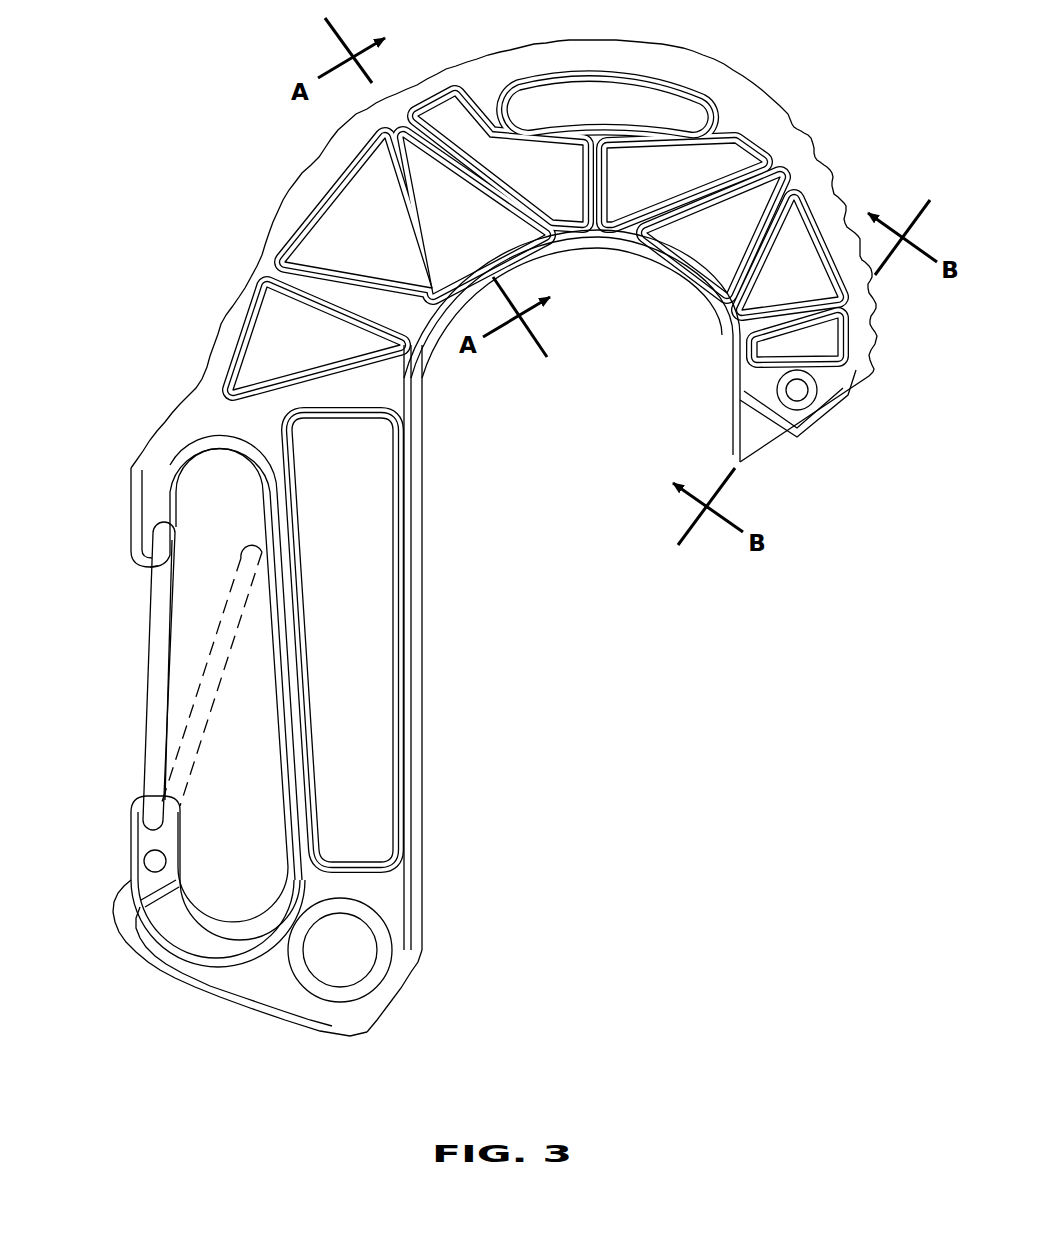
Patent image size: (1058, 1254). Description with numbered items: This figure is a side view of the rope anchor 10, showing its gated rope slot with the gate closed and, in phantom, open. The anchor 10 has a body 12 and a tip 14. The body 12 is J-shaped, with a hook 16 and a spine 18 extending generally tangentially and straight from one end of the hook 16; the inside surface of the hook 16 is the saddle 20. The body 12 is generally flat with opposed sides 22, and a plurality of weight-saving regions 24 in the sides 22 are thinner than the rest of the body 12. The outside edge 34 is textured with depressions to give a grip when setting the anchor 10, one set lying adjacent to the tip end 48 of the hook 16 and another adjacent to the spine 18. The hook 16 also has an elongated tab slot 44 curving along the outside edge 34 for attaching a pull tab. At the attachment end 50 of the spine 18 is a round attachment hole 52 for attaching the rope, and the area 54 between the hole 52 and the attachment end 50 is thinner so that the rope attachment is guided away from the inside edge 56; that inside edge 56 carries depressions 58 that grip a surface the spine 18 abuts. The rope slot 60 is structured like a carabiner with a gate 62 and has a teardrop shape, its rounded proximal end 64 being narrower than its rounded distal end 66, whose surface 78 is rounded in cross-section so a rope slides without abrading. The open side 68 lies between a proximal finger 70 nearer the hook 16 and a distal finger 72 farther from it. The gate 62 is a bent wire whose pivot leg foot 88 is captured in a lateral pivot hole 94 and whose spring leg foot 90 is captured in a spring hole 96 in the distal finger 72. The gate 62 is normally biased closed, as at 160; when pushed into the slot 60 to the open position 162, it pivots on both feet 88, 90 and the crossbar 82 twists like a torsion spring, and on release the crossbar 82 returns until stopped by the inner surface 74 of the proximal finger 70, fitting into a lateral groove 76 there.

The rope anchor 10 is at (778, 52).
The body 12 is at (312, 150).
The tip 14 is at (766, 457).
The hook 16 is at (492, 50).
The spine 18 is at (426, 690).
The saddle 20 is at (582, 248).
The sides 22 is at (378, 382).
The weight-saving regions 24 is at (325, 235).
The outside edge 34 is at (762, 103).
The tab slot 44 is at (612, 97).
The tip end 48 is at (812, 424).
The attachment end 50 is at (253, 1010).
The attachment hole 52 is at (360, 965).
The thinner area 54 is at (287, 990).
The inside edge 56 is at (415, 566).
The depressions 58 is at (412, 952).
The rope slot 60 is at (202, 890).
The gate 62 is at (148, 715).
The proximal slot end 64 is at (220, 450).
The distal slot end 66 is at (233, 920).
The open side 68 is at (127, 665).
The proximal finger 70 is at (128, 515).
The distal finger 72 is at (180, 862).
The inner surface 74 is at (173, 527).
The lateral groove 76 is at (150, 556).
The surface 78 is at (203, 926).
The crossbar 82 is at (178, 540).
The pivot leg foot 88 is at (150, 826).
The spring leg foot 90 is at (136, 873).
The pivot hole 94 is at (146, 832).
The spring hole 96 is at (153, 862).
The closed position 160 is at (147, 625).
The open position 162 is at (236, 661).